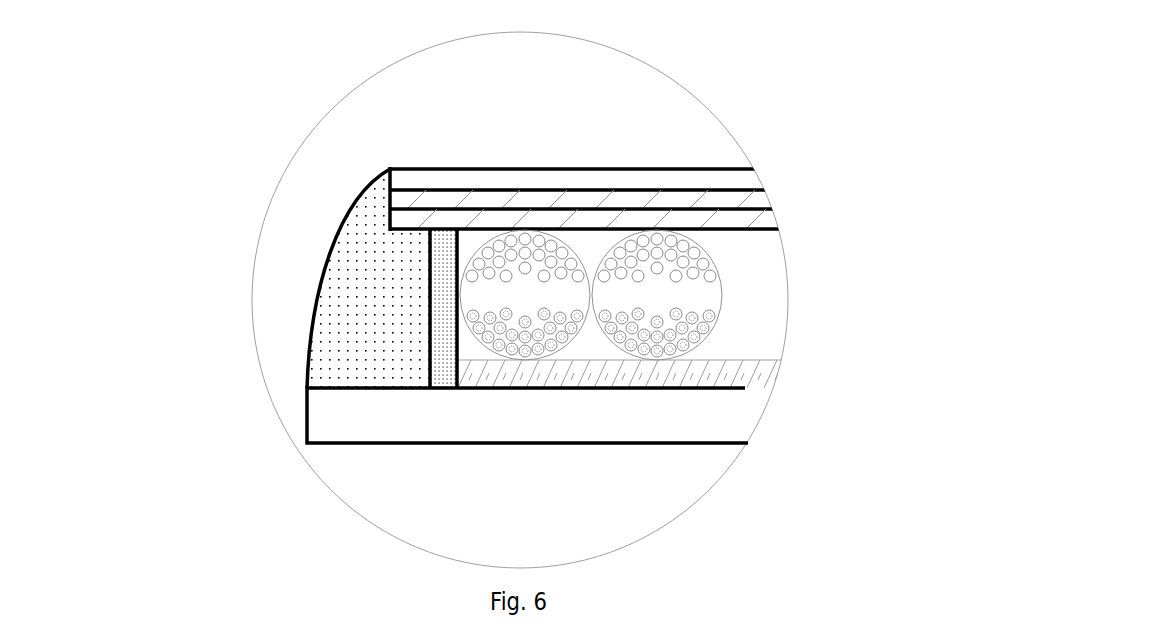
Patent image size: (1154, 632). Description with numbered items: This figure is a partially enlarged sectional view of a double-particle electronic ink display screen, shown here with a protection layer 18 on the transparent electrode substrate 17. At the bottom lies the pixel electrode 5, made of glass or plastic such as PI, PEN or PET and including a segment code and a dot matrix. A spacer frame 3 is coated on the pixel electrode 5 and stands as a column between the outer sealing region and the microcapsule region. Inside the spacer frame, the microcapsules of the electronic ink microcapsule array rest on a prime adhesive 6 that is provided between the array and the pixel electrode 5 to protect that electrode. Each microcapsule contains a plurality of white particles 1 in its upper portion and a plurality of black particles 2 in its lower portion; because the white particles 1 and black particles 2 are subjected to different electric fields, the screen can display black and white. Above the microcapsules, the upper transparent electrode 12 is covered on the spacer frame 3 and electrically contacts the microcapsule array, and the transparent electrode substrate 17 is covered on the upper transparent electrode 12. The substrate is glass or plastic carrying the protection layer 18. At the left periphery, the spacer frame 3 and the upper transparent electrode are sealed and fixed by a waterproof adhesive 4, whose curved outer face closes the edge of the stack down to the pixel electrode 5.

The white particles 1 is at (715, 268).
The black particles 2 is at (718, 318).
The spacer frame 3 is at (440, 295).
The waterproof adhesive 4 is at (358, 303).
The pixel electrode 5 is at (472, 417).
The prime adhesive 6 is at (738, 375).
The upper transparent electrode 12 is at (750, 200).
The transparent electrode substrate 17 is at (657, 180).
The protection layer 18 is at (543, 203).